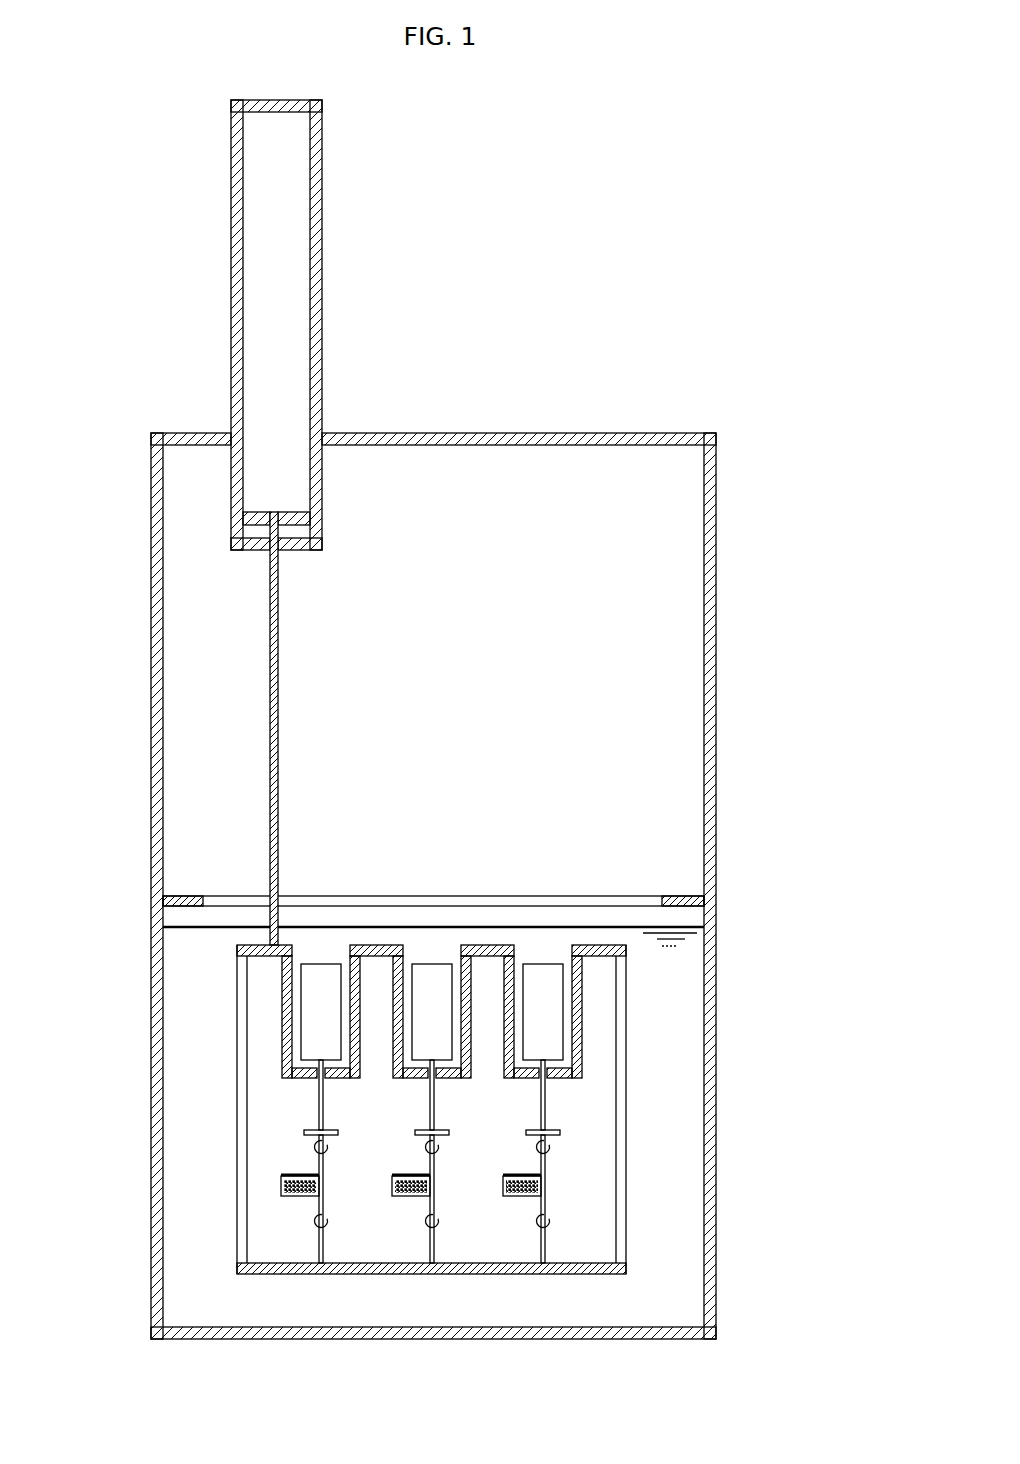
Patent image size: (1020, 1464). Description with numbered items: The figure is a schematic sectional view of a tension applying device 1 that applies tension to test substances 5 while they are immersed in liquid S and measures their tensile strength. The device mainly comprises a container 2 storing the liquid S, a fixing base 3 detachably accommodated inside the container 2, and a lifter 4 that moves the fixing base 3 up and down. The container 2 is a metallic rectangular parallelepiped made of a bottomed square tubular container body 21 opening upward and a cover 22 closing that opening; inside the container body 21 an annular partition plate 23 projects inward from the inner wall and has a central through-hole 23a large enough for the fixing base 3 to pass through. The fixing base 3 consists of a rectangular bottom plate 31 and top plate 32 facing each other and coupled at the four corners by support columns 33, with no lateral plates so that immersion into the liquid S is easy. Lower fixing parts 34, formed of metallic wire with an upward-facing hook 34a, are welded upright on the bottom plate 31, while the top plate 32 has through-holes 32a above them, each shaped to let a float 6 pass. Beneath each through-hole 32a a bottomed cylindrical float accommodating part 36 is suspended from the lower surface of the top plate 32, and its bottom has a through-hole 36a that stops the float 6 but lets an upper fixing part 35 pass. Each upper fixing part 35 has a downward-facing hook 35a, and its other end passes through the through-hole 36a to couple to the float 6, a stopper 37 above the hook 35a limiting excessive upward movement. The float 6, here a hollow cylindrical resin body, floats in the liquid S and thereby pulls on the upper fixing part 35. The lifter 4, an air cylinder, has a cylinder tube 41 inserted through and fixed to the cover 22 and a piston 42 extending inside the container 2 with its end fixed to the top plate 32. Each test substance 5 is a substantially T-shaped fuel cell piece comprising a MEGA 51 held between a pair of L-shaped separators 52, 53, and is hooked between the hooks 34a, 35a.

The tension applying device 1 is at (677, 253).
The container 2 is at (716, 548).
The container body 21 is at (716, 672).
The cover 22 is at (604, 436).
The partition plate 23 is at (680, 895).
The through-hole 23a is at (660, 898).
The fixing base 3 is at (626, 1030).
The bottom plate 31 is at (390, 1275).
The top plate 32 is at (370, 945).
The through-hole 32a is at (410, 947).
The support column 33 is at (240, 1110).
The lower fixing part 34 is at (435, 1247).
The hook 34a is at (430, 1222).
The upper fixing part 35 is at (430, 1114).
The hook 35a is at (439, 1150).
The float accommodating part 36 is at (473, 990).
The through-hole 36a is at (437, 1078).
The stopper 37 is at (413, 1132).
The lifter 4 is at (322, 227).
The cylinder tube 41 is at (322, 314).
The piston 42 is at (278, 640).
The test substance 5 is at (282, 1172).
The MEGA 51 is at (281, 1186).
The L-shaped separator 52 is at (296, 1197).
The L-shaped separator 53 is at (300, 1174).
The float 6 is at (436, 973).
The liquid S is at (188, 1020).